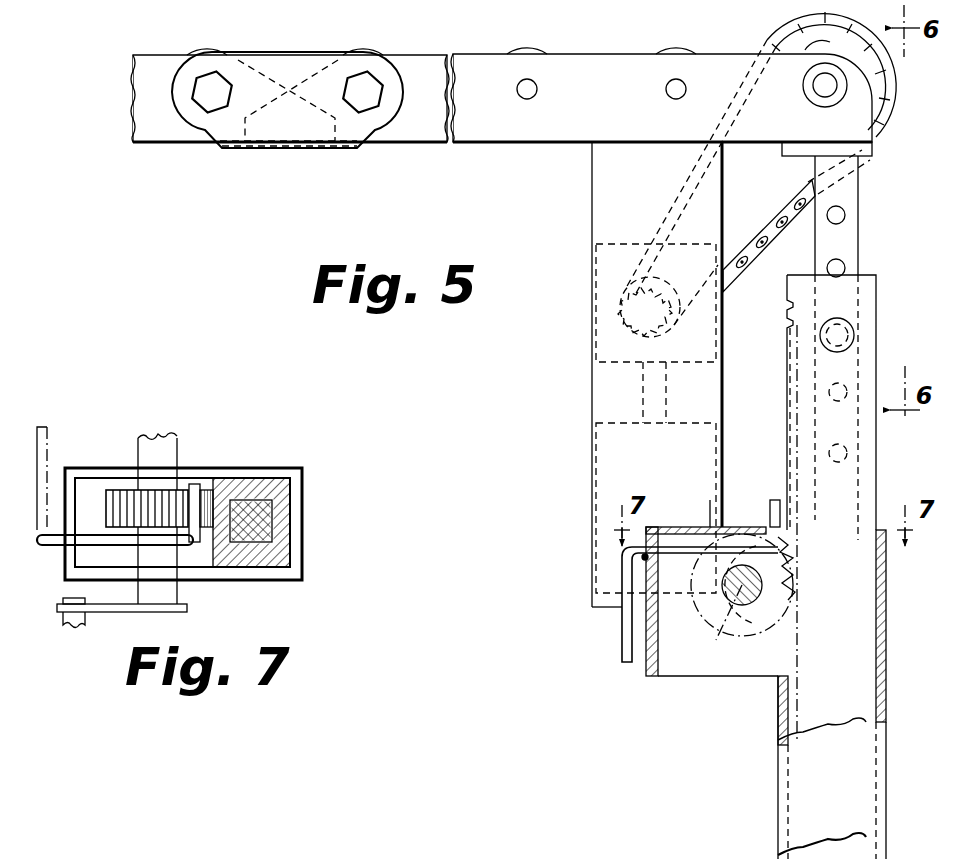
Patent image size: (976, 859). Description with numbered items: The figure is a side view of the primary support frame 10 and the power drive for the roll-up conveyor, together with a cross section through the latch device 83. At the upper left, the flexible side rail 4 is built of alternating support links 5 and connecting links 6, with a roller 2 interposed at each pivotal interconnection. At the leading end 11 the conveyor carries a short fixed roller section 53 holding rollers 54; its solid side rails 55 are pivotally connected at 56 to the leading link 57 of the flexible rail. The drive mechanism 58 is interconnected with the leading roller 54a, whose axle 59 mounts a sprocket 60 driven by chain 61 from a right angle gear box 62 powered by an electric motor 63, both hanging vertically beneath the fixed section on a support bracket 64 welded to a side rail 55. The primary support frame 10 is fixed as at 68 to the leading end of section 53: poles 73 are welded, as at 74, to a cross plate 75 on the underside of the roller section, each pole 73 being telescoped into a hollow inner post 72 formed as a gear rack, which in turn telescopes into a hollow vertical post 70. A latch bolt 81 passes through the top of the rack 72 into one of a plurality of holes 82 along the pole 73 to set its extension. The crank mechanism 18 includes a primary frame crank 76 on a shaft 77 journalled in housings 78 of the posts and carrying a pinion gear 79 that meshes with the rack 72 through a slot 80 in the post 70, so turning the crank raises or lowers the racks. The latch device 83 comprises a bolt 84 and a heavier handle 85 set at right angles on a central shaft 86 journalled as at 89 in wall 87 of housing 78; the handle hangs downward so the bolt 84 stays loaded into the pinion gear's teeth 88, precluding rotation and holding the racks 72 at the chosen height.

In FIG. 5, the roller 2 is at (207, 52).
In FIG. 5, the side rail 4 is at (133, 107).
In FIG. 5, the support link 5 is at (291, 67).
In FIG. 5, the connecting link 6 is at (181, 137).
In FIG. 5, the pivotal connection 56 is at (370, 92).
In FIG. 5, the leading link 57 is at (360, 132).
In FIG. 5, the fixed roller section 53 is at (583, 68).
In FIG. 5, the roller 54 is at (530, 44).
In FIG. 5, the leading roller 54a is at (812, 42).
In FIG. 5, the solid side rail 55 is at (552, 136).
In FIG. 5, the axle 59 is at (826, 96).
In FIG. 5, the sprocket 60 is at (877, 74).
In FIG. 5, the leading end 11 is at (908, 116).
In FIG. 5, the fixing point 68 is at (880, 146).
In FIG. 5, the weld 74 is at (860, 170).
In FIG. 5, the cross plate 75 is at (798, 148).
In FIG. 5, the chain 61 is at (786, 219).
In FIG. 5, the pole 73 is at (852, 247).
In FIG. 7, the pole 73 is at (265, 522).
In FIG. 5, the holes 82 is at (846, 268).
In FIG. 5, the latch bolt 81 is at (850, 338).
In FIG. 5, the right angle gear box 62 is at (613, 244).
In FIG. 5, the support bracket 64 is at (722, 395).
In FIG. 5, the electric motor 63 is at (597, 412).
In FIG. 5, the drive mechanism 58 is at (540, 372).
In FIG. 5, the bolt 84 is at (768, 528).
In FIG. 7, the bolt 84 is at (200, 487).
In FIG. 5, the journal 89 is at (641, 556).
In FIG. 5, the teeth 88 is at (792, 564).
In FIG. 5, the pinion gear 79 is at (776, 585).
In FIG. 7, the pinion gear 79 is at (118, 490).
In FIG. 5, the central shaft 86 is at (687, 560).
In FIG. 7, the central shaft 86 is at (96, 543).
In FIG. 5, the latch device 83 is at (618, 571).
In FIG. 7, the latch device 83 is at (45, 549).
In FIG. 5, the wall 87 is at (658, 622).
In FIG. 7, the wall 87 is at (73, 509).
In FIG. 5, the shaft 77 is at (729, 626).
In FIG. 7, the shaft 77 is at (165, 452).
In FIG. 5, the handle 85 is at (625, 646).
In FIG. 7, the handle 85 is at (49, 428).
In FIG. 5, the hollow inner post 72 is at (858, 594).
In FIG. 7, the hollow inner post 72 is at (262, 487).
In FIG. 5, the housing 78 is at (683, 667).
In FIG. 5, the slot 80 is at (780, 654).
In FIG. 5, the hollow vertical post 70 is at (881, 712).
In FIG. 7, the hollow vertical post 70 is at (298, 550).
In FIG. 5, the primary support frame 10 is at (778, 805).
In FIG. 7, the primary support frame 10 is at (315, 500).
In FIG. 7, the primary frame crank 76 is at (152, 608).
In FIG. 7, the crank mechanism 18 is at (115, 621).